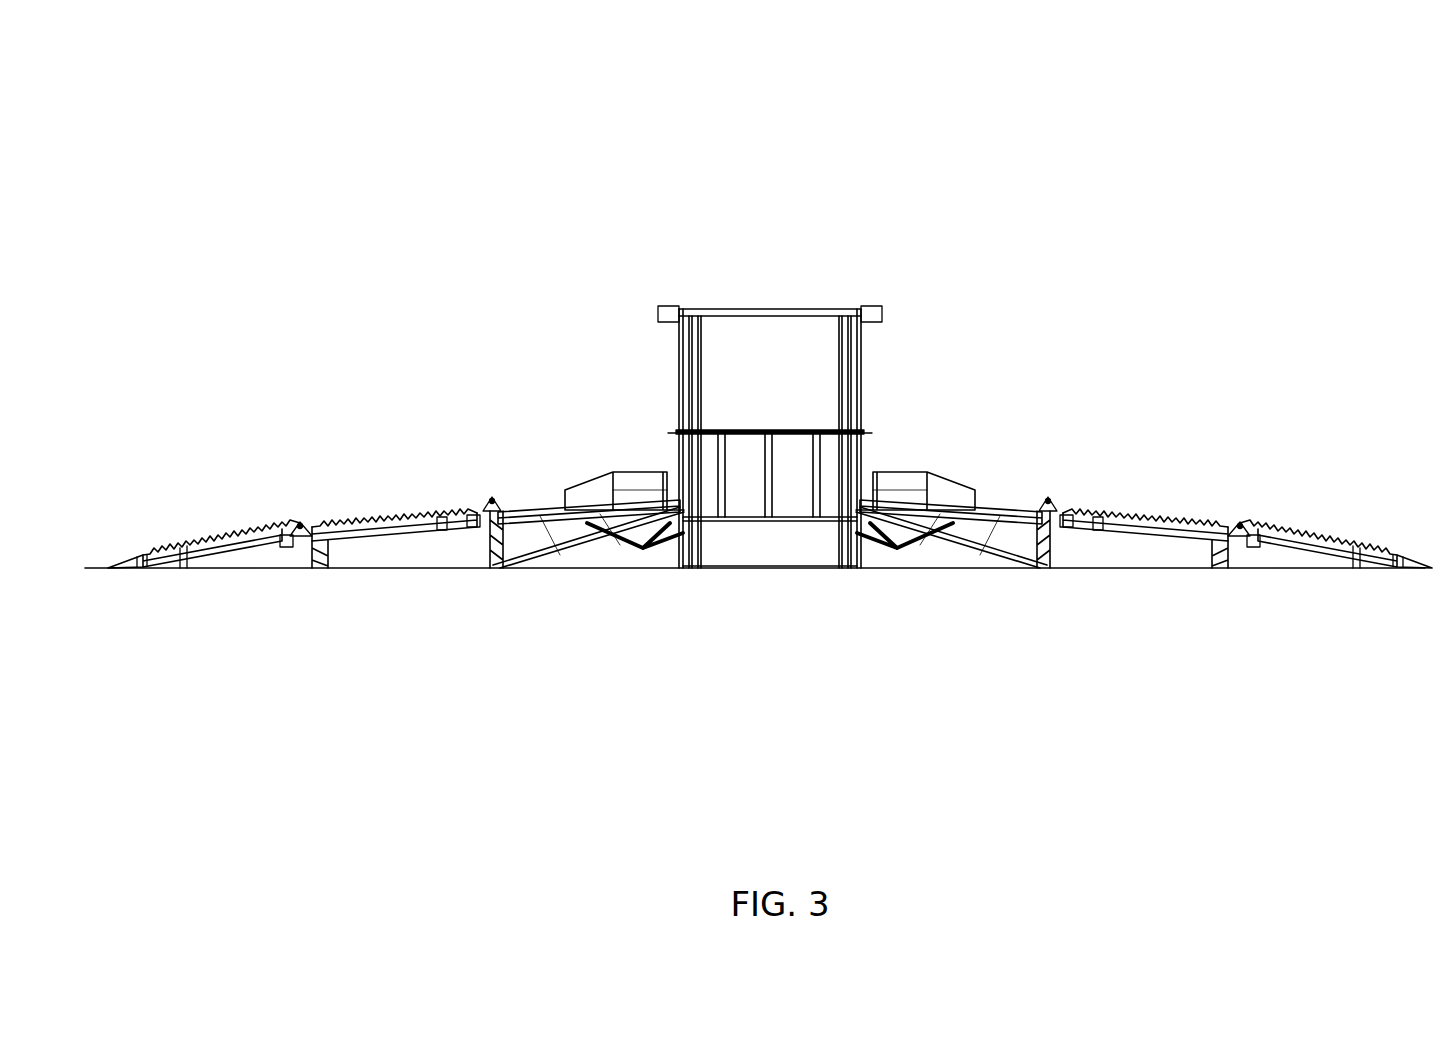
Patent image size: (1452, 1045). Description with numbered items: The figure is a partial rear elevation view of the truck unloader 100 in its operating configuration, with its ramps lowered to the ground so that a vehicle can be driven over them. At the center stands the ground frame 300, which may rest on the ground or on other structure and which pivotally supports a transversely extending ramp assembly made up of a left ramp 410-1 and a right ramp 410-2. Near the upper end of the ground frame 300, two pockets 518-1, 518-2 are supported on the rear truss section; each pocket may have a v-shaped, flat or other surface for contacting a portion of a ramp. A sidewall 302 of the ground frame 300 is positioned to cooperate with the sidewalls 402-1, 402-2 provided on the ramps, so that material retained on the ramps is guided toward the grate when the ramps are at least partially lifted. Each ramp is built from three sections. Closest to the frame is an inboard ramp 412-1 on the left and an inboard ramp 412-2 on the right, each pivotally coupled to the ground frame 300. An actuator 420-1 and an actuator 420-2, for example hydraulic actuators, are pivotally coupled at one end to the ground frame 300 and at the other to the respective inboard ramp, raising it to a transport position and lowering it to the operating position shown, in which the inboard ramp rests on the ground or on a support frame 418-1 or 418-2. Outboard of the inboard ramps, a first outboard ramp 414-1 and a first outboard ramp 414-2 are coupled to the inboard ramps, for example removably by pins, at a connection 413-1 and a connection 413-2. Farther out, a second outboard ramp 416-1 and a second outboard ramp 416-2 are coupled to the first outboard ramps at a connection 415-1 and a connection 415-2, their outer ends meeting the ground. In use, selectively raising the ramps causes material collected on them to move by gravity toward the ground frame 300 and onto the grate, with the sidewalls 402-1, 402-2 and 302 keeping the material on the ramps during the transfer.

The truck unloader 100 is at (1226, 118).
The ground frame 300 is at (758, 604).
The sidewall of the ground frame 302 is at (722, 432).
The sidewall 402-1 is at (663, 470).
The sidewall 402-2 is at (876, 470).
The left ramp 410-1 is at (341, 434).
The right ramp 410-2 is at (1150, 462).
The inboard ramp 412-1 is at (540, 510).
The inboard ramp 412-2 is at (1020, 510).
The connection 413-1 is at (488, 500).
The connection 413-2 is at (1050, 500).
The first outboard ramp 414-1 is at (383, 545).
The first outboard ramp 414-2 is at (1140, 550).
The connection 415-1 is at (300, 523).
The connection 415-2 is at (1238, 523).
The second outboard ramp 416-1 is at (260, 560).
The second outboard ramp 416-2 is at (1290, 560).
The support frame 418-1 is at (492, 565).
The support frame 418-2 is at (1065, 565).
The actuator 420-1 is at (600, 555).
The actuator 420-2 is at (925, 555).
The pocket 518-1 is at (670, 306).
The pocket 518-2 is at (868, 306).